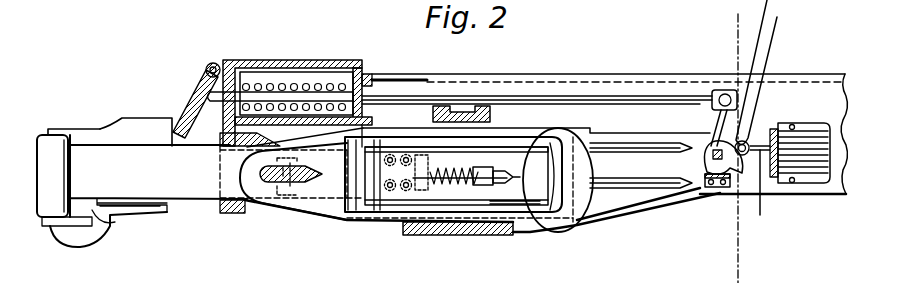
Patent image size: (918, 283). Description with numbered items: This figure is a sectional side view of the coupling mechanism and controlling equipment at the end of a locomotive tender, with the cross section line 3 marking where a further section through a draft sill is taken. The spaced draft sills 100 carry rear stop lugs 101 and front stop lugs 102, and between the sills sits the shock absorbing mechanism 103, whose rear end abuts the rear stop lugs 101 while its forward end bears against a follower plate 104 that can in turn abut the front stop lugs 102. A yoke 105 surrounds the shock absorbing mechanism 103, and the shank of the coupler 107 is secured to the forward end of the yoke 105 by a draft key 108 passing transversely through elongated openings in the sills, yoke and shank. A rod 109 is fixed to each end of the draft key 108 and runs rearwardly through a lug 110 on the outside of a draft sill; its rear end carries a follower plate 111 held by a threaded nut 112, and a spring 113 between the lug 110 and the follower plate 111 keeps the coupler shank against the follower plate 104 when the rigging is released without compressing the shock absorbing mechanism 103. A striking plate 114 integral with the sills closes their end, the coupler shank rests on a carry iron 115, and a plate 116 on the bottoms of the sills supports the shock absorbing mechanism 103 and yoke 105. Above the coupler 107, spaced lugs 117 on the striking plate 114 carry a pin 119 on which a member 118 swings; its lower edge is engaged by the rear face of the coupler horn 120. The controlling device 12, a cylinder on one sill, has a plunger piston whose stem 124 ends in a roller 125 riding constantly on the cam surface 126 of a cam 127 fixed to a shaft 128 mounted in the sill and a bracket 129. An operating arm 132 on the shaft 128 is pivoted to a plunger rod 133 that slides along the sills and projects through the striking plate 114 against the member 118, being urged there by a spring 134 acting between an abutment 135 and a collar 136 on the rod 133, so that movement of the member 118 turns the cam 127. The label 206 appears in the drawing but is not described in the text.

The section line 3— 3 is at (738, 14).
The controlling device 12 is at (778, 135).
The draft sills 100 is at (787, 90).
The rear stop lugs 101 is at (573, 187).
The front stop lugs 102 is at (364, 186).
The shock absorbing mechanism 103 is at (459, 179).
The follower plate 104 is at (377, 150).
The yoke 105 is at (358, 218).
The coupler 107 is at (58, 124).
The draft key 108 is at (283, 181).
The rod 109 is at (527, 152).
The lug 110 is at (427, 187).
The follower plate 111 is at (483, 167).
The nut 112 is at (492, 172).
The spring 113 is at (470, 187).
The striking plate 114 is at (213, 147).
The carry iron 115 is at (217, 213).
The plate 116 is at (452, 234).
The lugs 117 is at (228, 58).
The member 118 is at (200, 84).
The pin 119 is at (209, 64).
The coupler horn 120 is at (148, 111).
The stem 124 is at (773, 195).
The roller 125 is at (777, 17).
The cam surface 126 is at (767, 0).
The cam 127 is at (703, 158).
The shaft 128 is at (711, 163).
The bracket 129 is at (718, 188).
The operating arm 132 is at (722, 116).
The plunger rod 133 is at (667, 104).
The spring 134 is at (305, 87).
The abutment 135 is at (376, 74).
The collar 136 is at (250, 85).
The cartridge element 206 is at (307, 190).